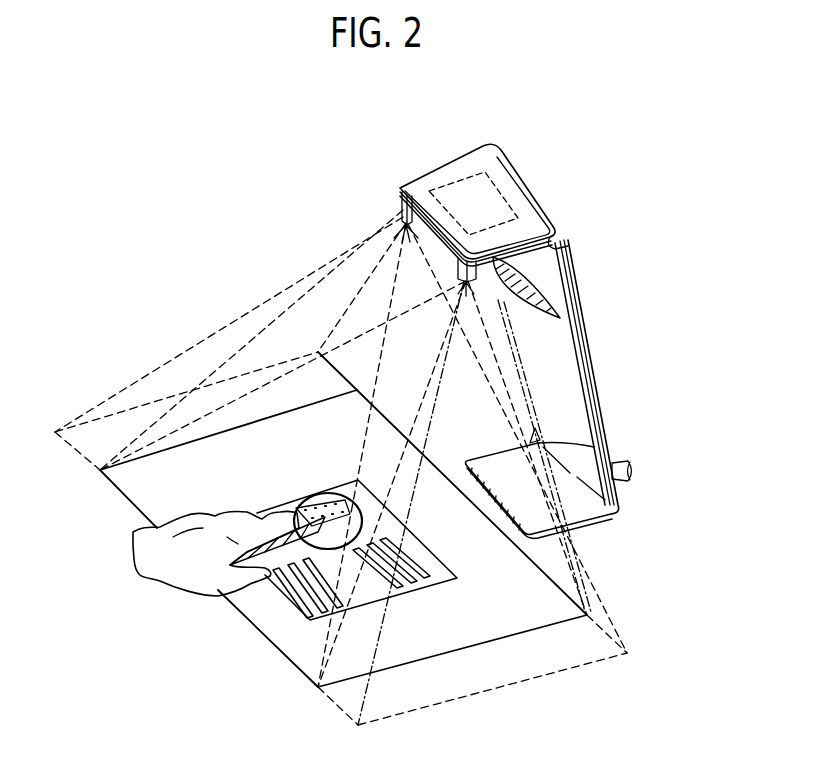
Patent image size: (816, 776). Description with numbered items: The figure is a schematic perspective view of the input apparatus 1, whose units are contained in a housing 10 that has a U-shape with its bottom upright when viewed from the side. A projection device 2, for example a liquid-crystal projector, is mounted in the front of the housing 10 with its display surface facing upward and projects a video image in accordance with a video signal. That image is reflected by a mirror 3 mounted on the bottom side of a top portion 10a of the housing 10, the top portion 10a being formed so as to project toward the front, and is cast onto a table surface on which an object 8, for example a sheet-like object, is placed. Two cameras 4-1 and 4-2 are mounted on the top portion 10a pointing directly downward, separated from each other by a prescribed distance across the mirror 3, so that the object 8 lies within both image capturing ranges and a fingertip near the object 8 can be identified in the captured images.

The input apparatus 1 is at (209, 177).
The projection device 2 is at (530, 300).
The mirror 3 is at (497, 201).
The camera 4-1 is at (401, 207).
The camera 4-2 is at (478, 270).
The object 8 is at (293, 607).
The housing 10 is at (574, 509).
The top portion 10a is at (493, 158).